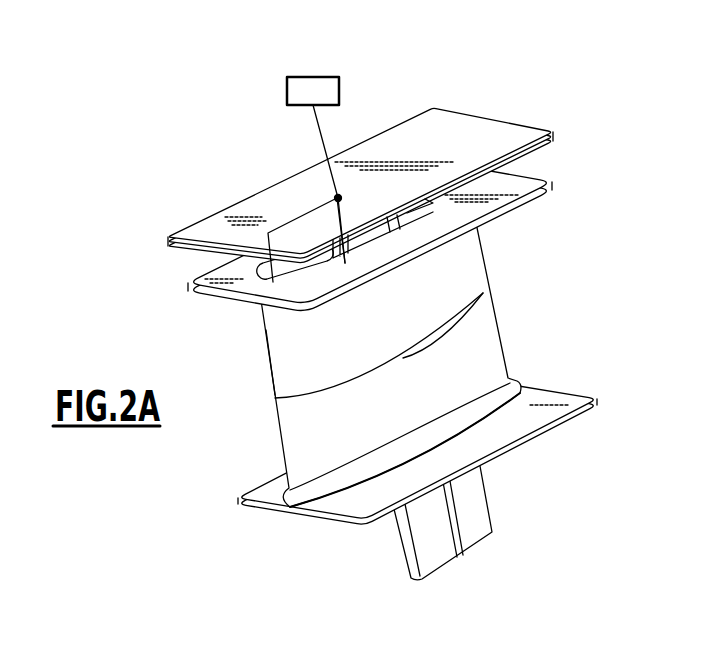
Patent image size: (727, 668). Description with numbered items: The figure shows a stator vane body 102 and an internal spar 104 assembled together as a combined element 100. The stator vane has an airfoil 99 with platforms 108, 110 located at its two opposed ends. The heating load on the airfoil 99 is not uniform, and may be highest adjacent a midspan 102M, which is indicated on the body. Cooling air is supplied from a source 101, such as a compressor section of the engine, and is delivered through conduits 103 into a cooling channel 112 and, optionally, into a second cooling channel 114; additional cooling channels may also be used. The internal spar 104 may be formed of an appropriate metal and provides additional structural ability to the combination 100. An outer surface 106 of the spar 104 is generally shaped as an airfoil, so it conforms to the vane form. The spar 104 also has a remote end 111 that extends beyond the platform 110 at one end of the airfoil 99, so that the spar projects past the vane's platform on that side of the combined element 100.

The combined element 100 is at (260, 114).
The source 101 is at (322, 85).
The conduits 103 is at (320, 136).
The internal spar 104 is at (272, 207).
The platform 108 is at (225, 275).
The second cooling channel 114 is at (265, 282).
The outer surface 106 is at (376, 240).
The cooling channel 112 is at (407, 217).
The midspan 102M is at (403, 358).
The airfoil 99 is at (277, 363).
The stator vane body 102 is at (313, 383).
The platform 110 is at (262, 500).
The remote end 111 is at (477, 517).